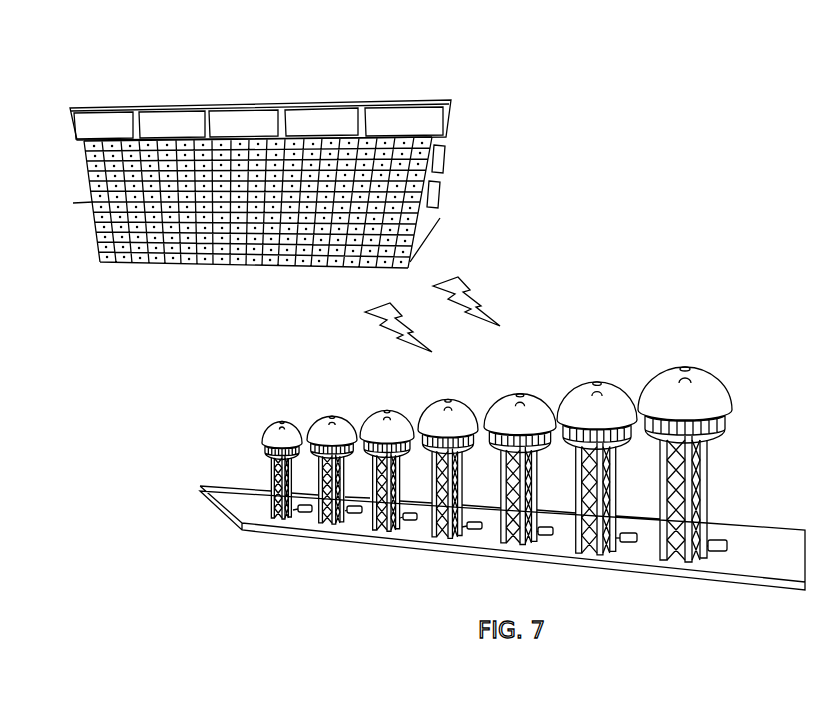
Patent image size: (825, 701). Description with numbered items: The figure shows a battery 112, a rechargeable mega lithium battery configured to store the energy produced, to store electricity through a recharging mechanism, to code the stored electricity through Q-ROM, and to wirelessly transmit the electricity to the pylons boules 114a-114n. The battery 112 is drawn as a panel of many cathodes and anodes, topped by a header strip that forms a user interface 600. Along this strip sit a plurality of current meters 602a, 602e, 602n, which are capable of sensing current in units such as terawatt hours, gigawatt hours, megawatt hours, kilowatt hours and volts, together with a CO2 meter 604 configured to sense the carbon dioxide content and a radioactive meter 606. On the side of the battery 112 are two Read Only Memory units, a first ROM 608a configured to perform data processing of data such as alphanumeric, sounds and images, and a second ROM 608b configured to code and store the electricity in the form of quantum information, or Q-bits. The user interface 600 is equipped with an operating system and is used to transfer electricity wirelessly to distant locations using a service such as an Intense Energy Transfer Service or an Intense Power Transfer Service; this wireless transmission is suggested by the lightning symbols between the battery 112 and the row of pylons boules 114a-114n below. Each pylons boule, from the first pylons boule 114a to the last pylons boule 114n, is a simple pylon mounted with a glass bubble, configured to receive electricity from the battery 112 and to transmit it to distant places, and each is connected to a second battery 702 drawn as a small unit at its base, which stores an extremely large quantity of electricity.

The battery 112 is at (161, 83).
The user interface 600 is at (448, 135).
The current meter 602a is at (128, 135).
The current meter 602e is at (193, 135).
The current meter 602n is at (265, 134).
The CO2 meter 604 is at (333, 133).
The radioactive meter 606 is at (417, 133).
The first Read Only Memory (ROM) 608a is at (446, 160).
The second Read Only Memory (ROM) 608b is at (441, 195).
The pylons boule 114a is at (283, 519).
The pylons boule 114n is at (697, 561).
The second battery 702 is at (305, 513).